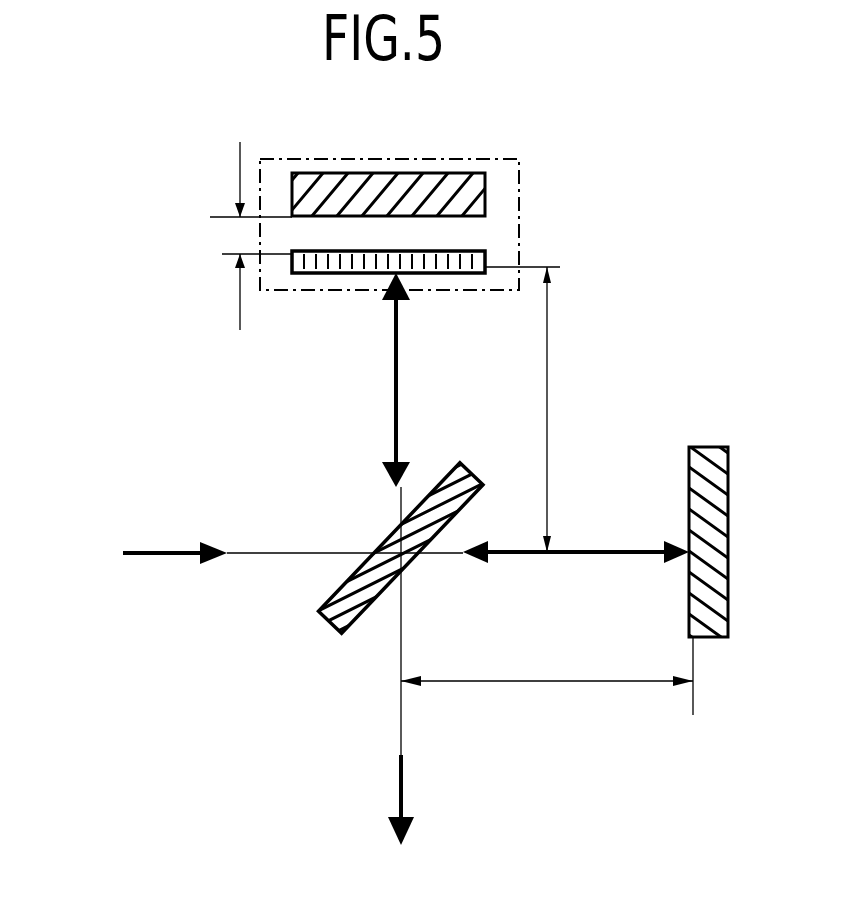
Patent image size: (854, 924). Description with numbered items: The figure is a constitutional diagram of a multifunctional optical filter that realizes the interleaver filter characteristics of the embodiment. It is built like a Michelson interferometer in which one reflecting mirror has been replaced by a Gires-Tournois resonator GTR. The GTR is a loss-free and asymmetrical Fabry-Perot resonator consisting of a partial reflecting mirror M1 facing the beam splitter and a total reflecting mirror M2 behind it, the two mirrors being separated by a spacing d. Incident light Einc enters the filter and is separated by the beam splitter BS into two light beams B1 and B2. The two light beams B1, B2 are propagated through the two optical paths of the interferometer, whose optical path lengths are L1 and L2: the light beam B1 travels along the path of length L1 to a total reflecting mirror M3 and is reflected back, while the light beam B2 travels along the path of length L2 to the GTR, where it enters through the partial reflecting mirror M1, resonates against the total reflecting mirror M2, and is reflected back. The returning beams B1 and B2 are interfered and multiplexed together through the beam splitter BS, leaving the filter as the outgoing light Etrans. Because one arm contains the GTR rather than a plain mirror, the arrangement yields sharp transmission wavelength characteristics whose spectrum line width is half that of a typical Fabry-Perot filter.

The Gires-Tournois resonator GTR is at (389, 205).
The partial reflecting mirror M1 is at (485, 258).
The total reflecting mirror M2 is at (485, 190).
The total reflecting mirror M3 is at (705, 447).
The beam splitter BS is at (333, 628).
The light beam B1 is at (576, 563).
The light beam B2 is at (408, 380).
The optical path length L1 is at (547, 676).
The optical path length L2 is at (532, 409).
The mirror spacing d is at (250, 236).
The incident light Einc is at (265, 553).
The outgoing light Etrans is at (404, 685).